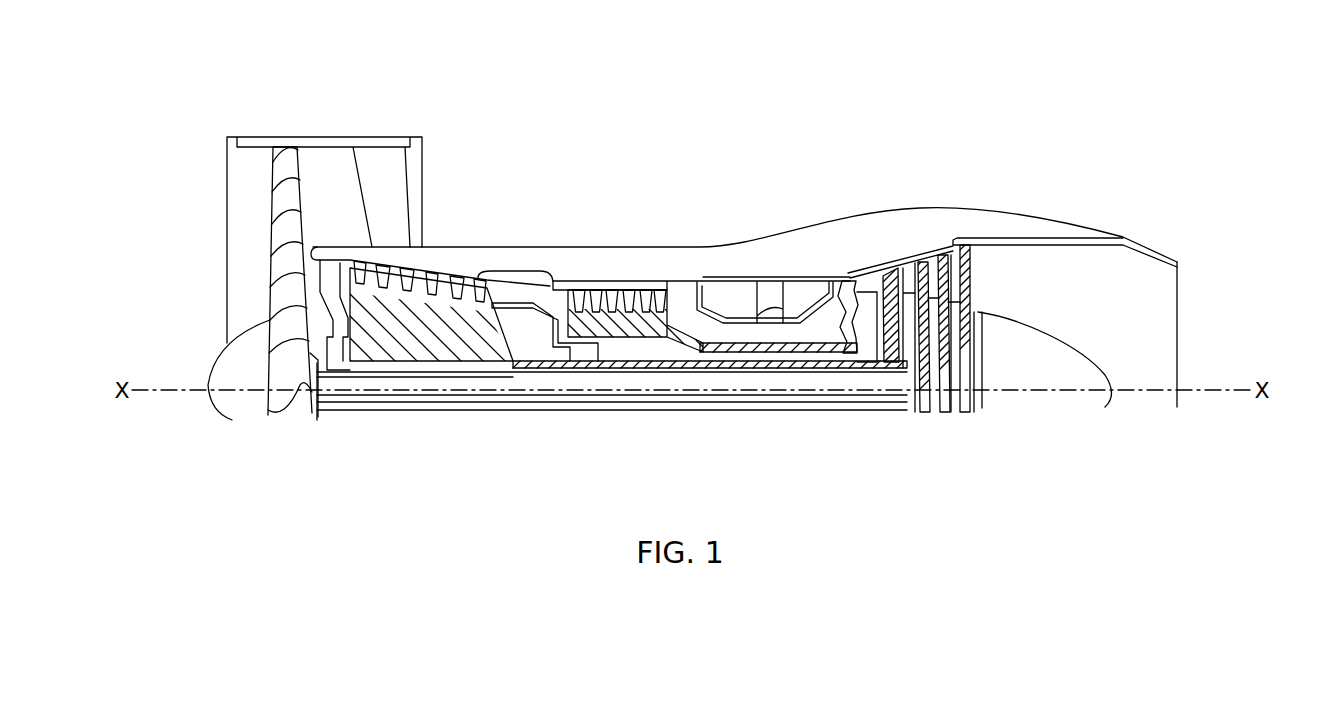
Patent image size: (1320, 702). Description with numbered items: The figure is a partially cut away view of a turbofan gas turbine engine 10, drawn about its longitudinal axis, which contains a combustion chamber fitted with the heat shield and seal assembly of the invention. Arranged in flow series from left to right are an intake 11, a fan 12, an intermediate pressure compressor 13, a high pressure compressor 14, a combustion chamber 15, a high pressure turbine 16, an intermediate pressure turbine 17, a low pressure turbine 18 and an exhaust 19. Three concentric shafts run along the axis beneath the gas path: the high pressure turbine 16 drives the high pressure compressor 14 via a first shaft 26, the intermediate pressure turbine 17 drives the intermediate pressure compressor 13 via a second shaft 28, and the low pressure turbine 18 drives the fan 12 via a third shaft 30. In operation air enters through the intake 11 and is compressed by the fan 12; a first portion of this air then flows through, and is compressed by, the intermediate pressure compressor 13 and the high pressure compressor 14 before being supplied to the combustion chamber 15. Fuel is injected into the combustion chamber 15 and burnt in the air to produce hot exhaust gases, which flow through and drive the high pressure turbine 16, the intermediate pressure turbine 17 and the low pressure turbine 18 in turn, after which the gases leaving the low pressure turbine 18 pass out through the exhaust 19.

The turbofan gas turbine engine 10 is at (590, 170).
The intake 11 is at (205, 265).
The fan 12 is at (292, 172).
The intermediate pressure compressor 13 is at (430, 308).
The high pressure compressor 14 is at (620, 292).
The combustion chamber 15 is at (771, 264).
The high pressure turbine 16 is at (847, 287).
The intermediate pressure turbine 17 is at (889, 266).
The low pressure turbine 18 is at (968, 265).
The exhaust 19 is at (1165, 333).
The first shaft 26 is at (832, 352).
The second shaft 28 is at (570, 368).
The third shaft 30 is at (460, 416).